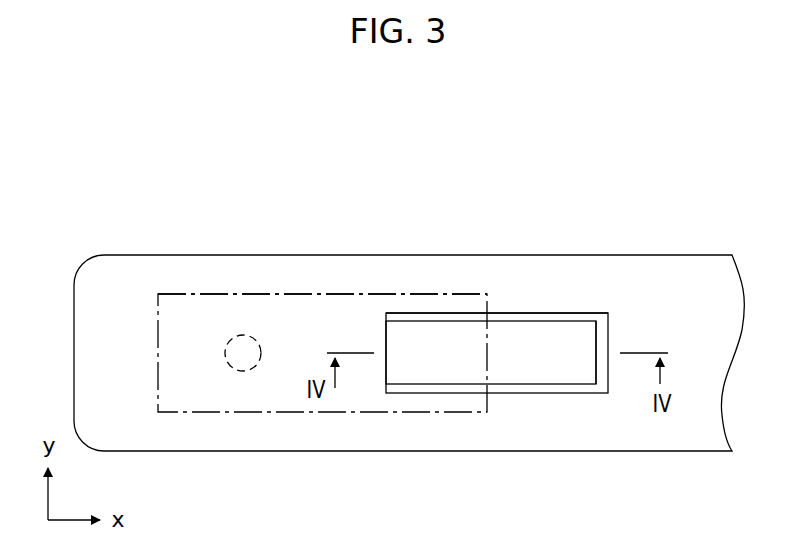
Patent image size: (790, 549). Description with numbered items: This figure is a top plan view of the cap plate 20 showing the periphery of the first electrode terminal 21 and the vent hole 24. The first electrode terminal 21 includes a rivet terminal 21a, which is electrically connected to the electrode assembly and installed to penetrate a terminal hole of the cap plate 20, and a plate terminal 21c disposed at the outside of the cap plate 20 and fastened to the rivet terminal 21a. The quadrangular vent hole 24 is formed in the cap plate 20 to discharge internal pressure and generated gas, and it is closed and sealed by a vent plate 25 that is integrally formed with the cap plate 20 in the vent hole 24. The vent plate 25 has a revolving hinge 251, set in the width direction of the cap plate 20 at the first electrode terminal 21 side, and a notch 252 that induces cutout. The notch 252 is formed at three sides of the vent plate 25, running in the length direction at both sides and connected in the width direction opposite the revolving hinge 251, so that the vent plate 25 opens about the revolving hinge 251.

The cap plate 20 is at (290, 428).
The first electrode terminal 21 is at (328, 193).
The rivet terminal 21a is at (243, 335).
The plate terminal 21c is at (305, 294).
The vent hole 24 is at (528, 313).
The vent plate 25 is at (544, 370).
The revolving hinge 251 is at (386, 368).
The notch 252 is at (597, 335).